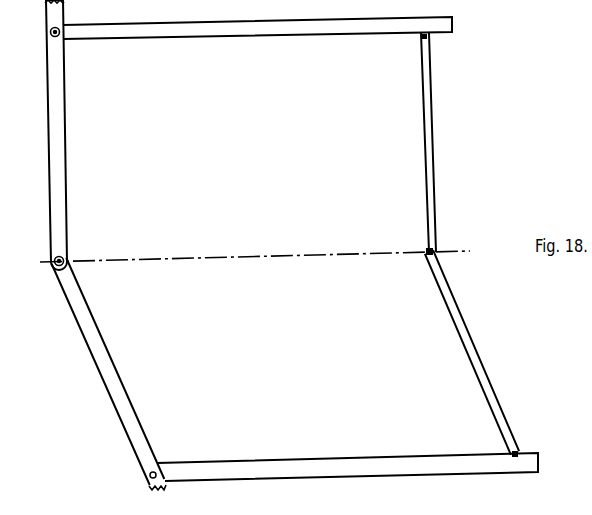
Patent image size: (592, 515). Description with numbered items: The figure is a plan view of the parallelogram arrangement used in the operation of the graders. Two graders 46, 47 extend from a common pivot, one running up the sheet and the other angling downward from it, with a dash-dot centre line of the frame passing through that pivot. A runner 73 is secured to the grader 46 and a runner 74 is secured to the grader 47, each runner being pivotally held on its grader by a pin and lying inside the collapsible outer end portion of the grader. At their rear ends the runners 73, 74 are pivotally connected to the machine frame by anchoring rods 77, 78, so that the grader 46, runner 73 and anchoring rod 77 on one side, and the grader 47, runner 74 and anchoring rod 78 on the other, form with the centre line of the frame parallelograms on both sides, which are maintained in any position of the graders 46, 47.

The grader 46 is at (67, 152).
The grader 47 is at (120, 380).
The runner 73 is at (302, 36).
The runner 74 is at (305, 460).
The anchoring rod 77 is at (433, 131).
The anchoring rod 78 is at (484, 376).